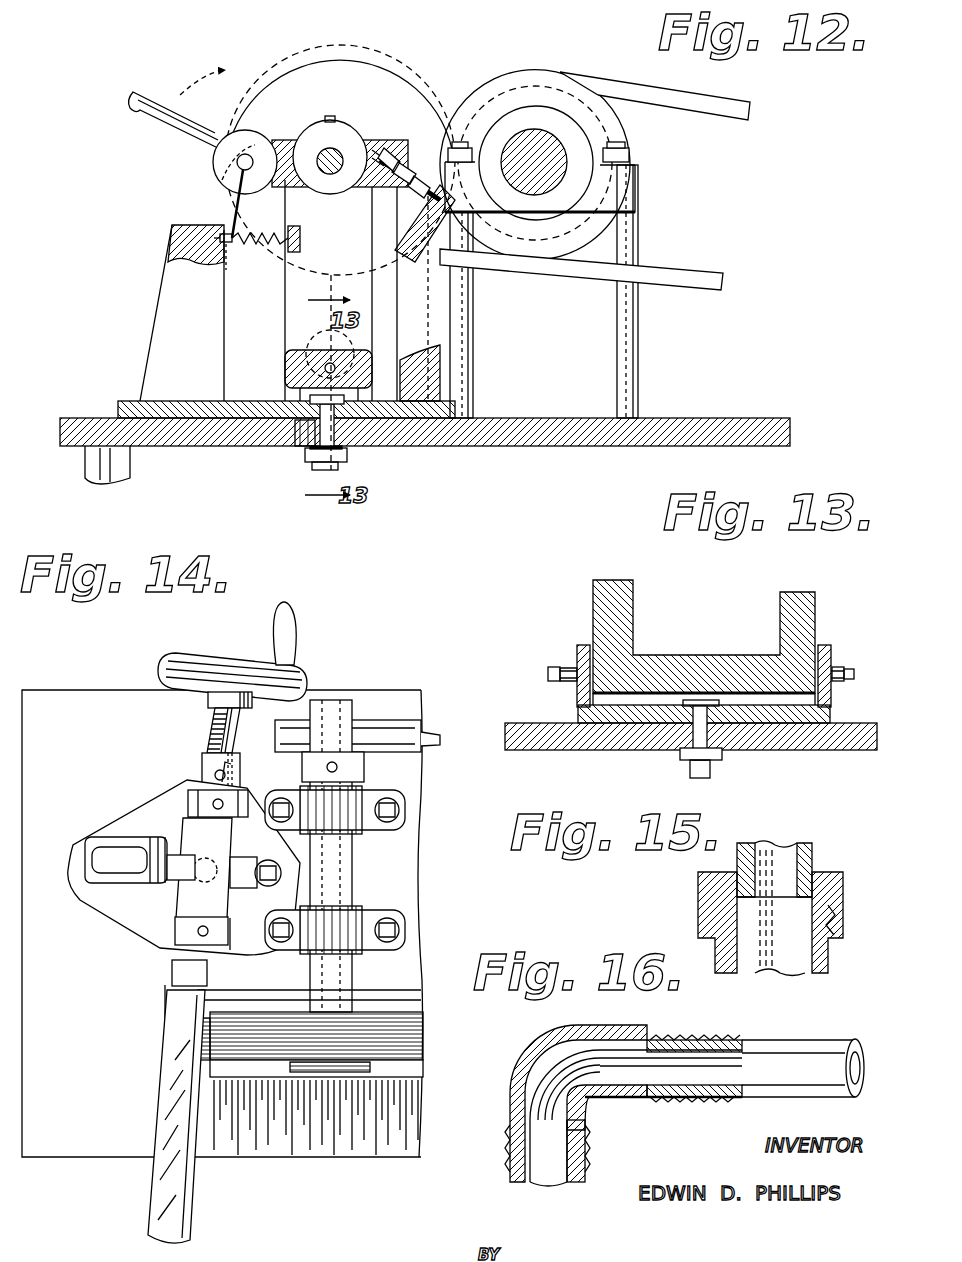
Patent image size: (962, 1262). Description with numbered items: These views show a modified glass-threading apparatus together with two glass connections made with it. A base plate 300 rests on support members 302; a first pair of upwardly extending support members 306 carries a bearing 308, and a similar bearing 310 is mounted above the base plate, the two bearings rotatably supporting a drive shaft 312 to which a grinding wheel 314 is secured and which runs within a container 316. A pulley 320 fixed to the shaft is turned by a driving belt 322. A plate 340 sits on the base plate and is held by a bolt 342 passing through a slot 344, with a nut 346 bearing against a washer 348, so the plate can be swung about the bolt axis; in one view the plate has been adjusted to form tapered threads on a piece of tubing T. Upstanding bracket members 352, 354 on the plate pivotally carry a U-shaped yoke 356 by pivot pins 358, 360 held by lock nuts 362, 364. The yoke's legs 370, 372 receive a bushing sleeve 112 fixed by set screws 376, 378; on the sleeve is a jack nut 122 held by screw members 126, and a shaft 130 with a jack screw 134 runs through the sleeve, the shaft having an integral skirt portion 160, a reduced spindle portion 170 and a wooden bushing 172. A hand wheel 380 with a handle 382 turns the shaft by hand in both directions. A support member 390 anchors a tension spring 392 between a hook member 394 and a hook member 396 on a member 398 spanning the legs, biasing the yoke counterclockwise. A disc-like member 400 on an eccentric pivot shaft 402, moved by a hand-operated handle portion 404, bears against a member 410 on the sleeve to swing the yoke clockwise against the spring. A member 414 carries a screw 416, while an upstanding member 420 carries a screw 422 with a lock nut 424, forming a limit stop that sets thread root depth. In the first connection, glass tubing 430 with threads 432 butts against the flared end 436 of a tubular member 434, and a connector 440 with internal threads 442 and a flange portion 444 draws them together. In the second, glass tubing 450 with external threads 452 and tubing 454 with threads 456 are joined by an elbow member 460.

In FIG. 12, the base plate 300 is at (545, 440).
In FIG. 13, the base plate 300 is at (522, 738).
In FIG. 14, the base plate 300 is at (76, 1094).
In FIG. 12, the support members 302 is at (128, 470).
In FIG. 12, the upwardly extending support members 306 is at (473, 320).
In FIG. 12, the bearing 308 is at (638, 198).
In FIG. 14, the bearing 308 is at (362, 834).
In FIG. 14, the bearing 310 is at (366, 910).
In FIG. 12, the drive shaft 312 is at (552, 176).
In FIG. 14, the drive shaft 312 is at (345, 968).
In FIG. 14, the grinding wheel 314 is at (396, 1072).
In FIG. 14, the container 316 is at (262, 1082).
In FIG. 12, the pulley 320 is at (620, 127).
In FIG. 14, the pulley 320 is at (382, 722).
In FIG. 12, the driving belt 322 is at (745, 108).
In FIG. 14, the driving belt 322 is at (440, 736).
In FIG. 12, the plate 340 is at (228, 420).
In FIG. 13, the plate 340 is at (822, 712).
In FIG. 14, the plate 340 is at (110, 890).
In FIG. 12, the bolt 342 is at (337, 430).
In FIG. 13, the bolt 342 is at (708, 732).
In FIG. 12, the slot 344 is at (305, 450).
In FIG. 12, the nut 346 is at (350, 455).
In FIG. 13, the nut 346 is at (682, 756).
In FIG. 12, the washer 348 is at (318, 472).
In FIG. 13, the washer 348 is at (708, 758).
In FIG. 13, the bracket member 352 is at (578, 656).
In FIG. 13, the bracket member 354 is at (832, 665).
In FIG. 12, the U-shaped yoke 356 is at (283, 366).
In FIG. 13, the U-shaped yoke 356 is at (678, 653).
In FIG. 13, the pivot pin 358 is at (562, 680).
In FIG. 13, the pivot pin 360 is at (850, 682).
In FIG. 13, the lock nut 362 is at (576, 668).
In FIG. 13, the lock nut 364 is at (848, 674).
In FIG. 12, the leg 370 is at (292, 282).
In FIG. 13, the leg 370 is at (598, 590).
In FIG. 14, the leg 370 is at (190, 788).
In FIG. 13, the leg 372 is at (820, 606).
In FIG. 14, the leg 372 is at (176, 938).
In FIG. 14, the set screw 376 is at (242, 830).
In FIG. 14, the set screw 378 is at (224, 945).
In FIG. 14, the hand wheel 380 is at (200, 655).
In FIG. 14, the handle 382 is at (296, 632).
In FIG. 12, the support member 390 is at (160, 310).
In FIG. 12, the tension spring 392 is at (234, 248).
In FIG. 12, the hook member 394 is at (222, 246).
In FIG. 12, the hook member 396 is at (268, 235).
In FIG. 12, the member 398 is at (302, 238).
In FIG. 12, the disc-like member 400 is at (240, 134).
In FIG. 12, the eccentric pivot shaft 402 is at (212, 204).
In FIG. 12, the hand-operated handle portion 404 is at (203, 132).
In FIG. 12, the member 410 is at (335, 120).
In FIG. 12, the member 414 is at (376, 148).
In FIG. 12, the screw 416 is at (402, 162).
In FIG. 12, the upstanding member 420 is at (442, 256).
In FIG. 12, the screw 422 is at (412, 186).
In FIG. 12, the lock nut 424 is at (447, 166).
In FIG. 15, the tubing 430 is at (830, 973).
In FIG. 15, the threads 432 is at (840, 920).
In FIG. 15, the tubular member 434 is at (783, 852).
In FIG. 15, the flared end 436 is at (820, 876).
In FIG. 15, the connector 440 is at (832, 905).
In FIG. 15, the internal threads 442 is at (815, 918).
In FIG. 15, the flange portion 444 is at (738, 860).
In FIG. 16, the tubing 450 is at (522, 1180).
In FIG. 16, the external threads 452 is at (590, 1150).
In FIG. 16, the tubing 454 is at (752, 1097).
In FIG. 16, the threads 456 is at (630, 1030).
In FIG. 16, the elbow member 460 is at (530, 1062).
In FIG. 12, the bushing sleeve 112 is at (348, 140).
In FIG. 14, the bushing sleeve 112 is at (190, 828).
In FIG. 14, the jack nut 122 is at (240, 770).
In FIG. 14, the screw members 126 is at (214, 768).
In FIG. 12, the shaft 130 is at (320, 176).
In FIG. 14, the jack screw 134 is at (215, 712).
In FIG. 14, the skirt portion 160 is at (170, 975).
In FIG. 14, the spindle portion 170 is at (182, 1000).
In FIG. 14, the bushing 172 is at (178, 1012).
In FIG. 14, the tubing T is at (196, 1190).